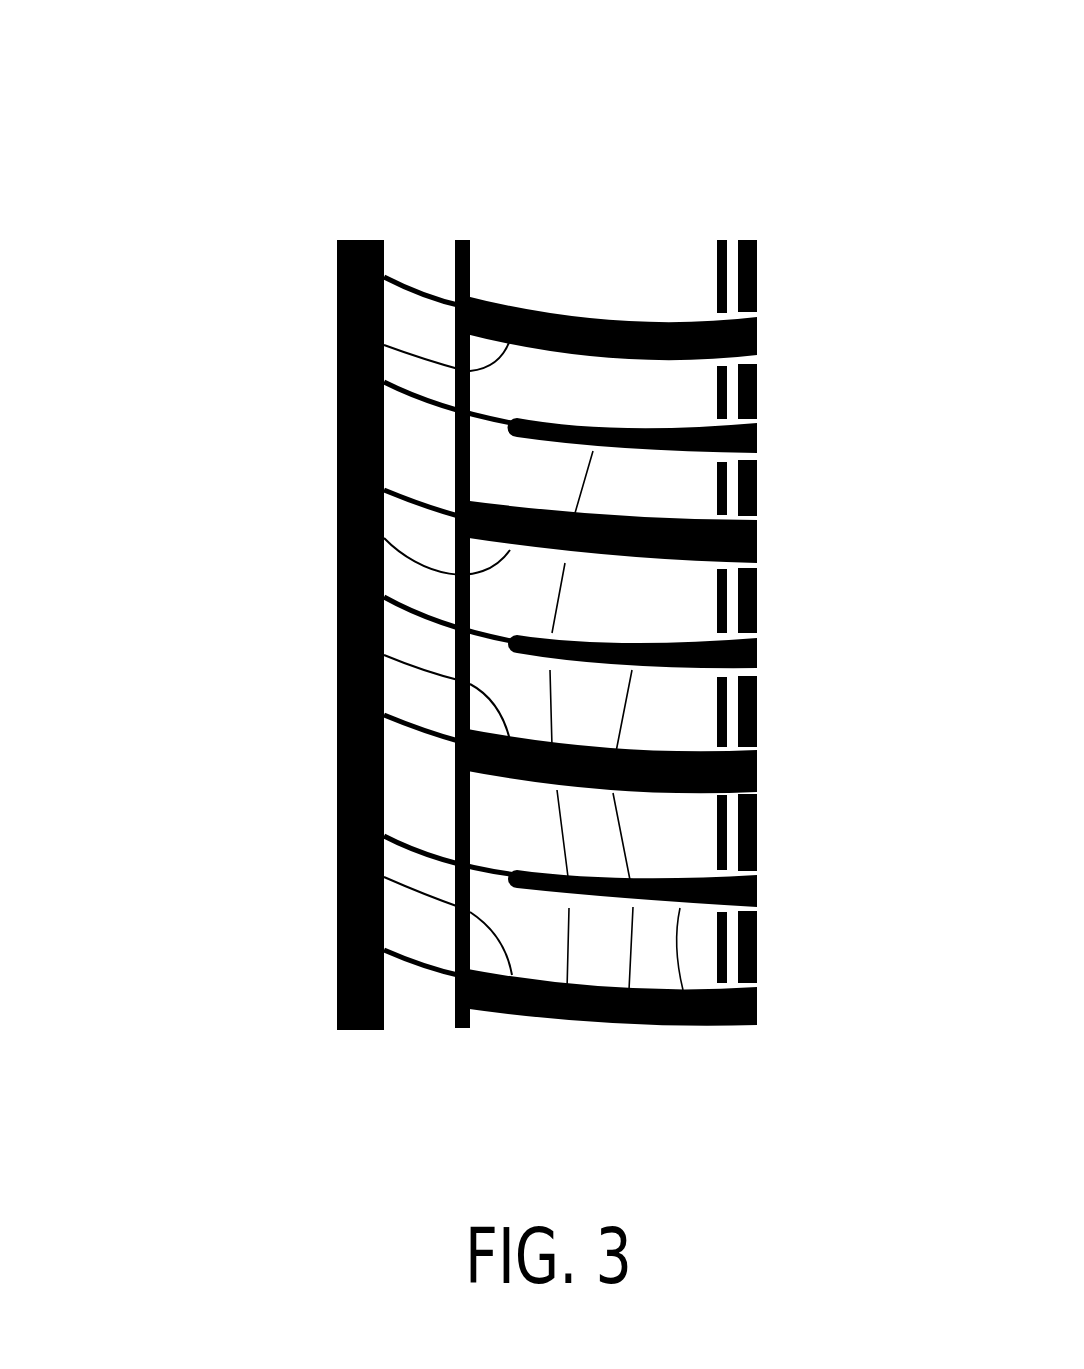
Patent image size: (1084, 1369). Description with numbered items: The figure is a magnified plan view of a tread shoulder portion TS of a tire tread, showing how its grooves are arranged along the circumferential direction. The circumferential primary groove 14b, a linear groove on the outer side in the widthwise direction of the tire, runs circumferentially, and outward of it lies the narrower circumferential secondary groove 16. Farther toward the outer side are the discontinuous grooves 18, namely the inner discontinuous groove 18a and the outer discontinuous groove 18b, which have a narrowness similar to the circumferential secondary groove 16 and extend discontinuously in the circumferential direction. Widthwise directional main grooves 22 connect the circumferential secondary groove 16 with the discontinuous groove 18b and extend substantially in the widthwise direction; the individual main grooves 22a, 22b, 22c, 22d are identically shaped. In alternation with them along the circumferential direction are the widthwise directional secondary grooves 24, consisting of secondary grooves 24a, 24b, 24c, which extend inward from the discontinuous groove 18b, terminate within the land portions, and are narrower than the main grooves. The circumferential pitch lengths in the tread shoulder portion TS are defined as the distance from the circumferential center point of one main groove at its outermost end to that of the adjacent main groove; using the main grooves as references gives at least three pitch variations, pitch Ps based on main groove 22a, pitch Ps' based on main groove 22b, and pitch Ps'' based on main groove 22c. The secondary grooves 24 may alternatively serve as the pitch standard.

The tread shoulder portion TS is at (783, 97).
The circumferential primary groove 14b is at (363, 240).
The circumferential secondary groove 16 is at (466, 240).
The discontinuous grooves 18 is at (790, 155).
The discontinuous groove 18a is at (722, 240).
The discontinuous groove 18b is at (745, 240).
The widthwise directional main grooves 22 is at (195, 322).
The widthwise directional main groove 22a is at (338, 847).
The widthwise directional main groove 22b is at (338, 625).
The widthwise directional main groove 22c is at (338, 492).
The widthwise directional main groove 22d is at (338, 340).
The widthwise directional secondary grooves 24 is at (722, 1115).
The widthwise directional secondary groove 24a is at (688, 1030).
The widthwise directional secondary groove 24b is at (623, 1028).
The widthwise directional secondary groove 24c is at (560, 1025).
The pitch Ps is at (806, 888).
The pitch Ps' is at (809, 654).
The pitch Ps'' is at (811, 436).